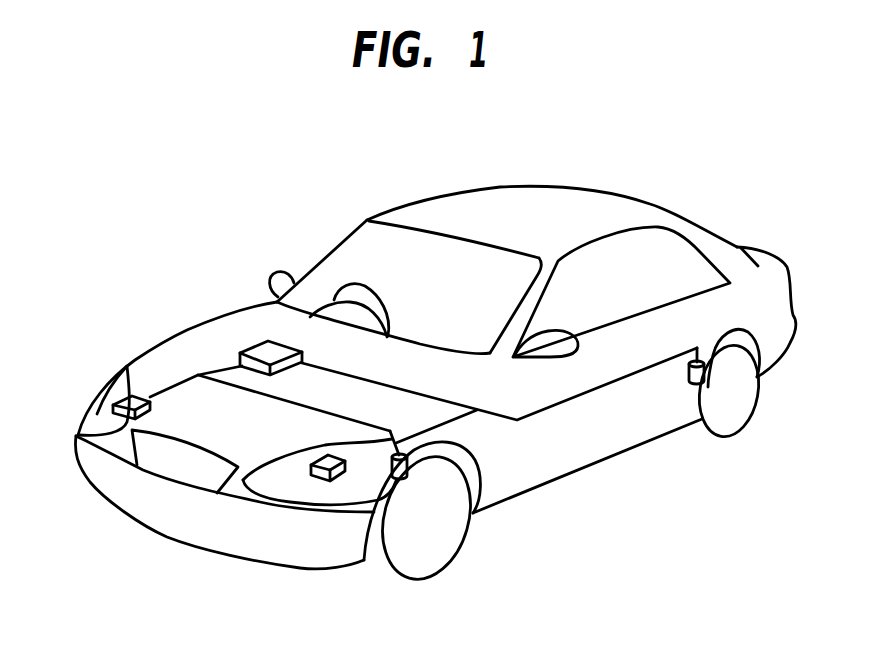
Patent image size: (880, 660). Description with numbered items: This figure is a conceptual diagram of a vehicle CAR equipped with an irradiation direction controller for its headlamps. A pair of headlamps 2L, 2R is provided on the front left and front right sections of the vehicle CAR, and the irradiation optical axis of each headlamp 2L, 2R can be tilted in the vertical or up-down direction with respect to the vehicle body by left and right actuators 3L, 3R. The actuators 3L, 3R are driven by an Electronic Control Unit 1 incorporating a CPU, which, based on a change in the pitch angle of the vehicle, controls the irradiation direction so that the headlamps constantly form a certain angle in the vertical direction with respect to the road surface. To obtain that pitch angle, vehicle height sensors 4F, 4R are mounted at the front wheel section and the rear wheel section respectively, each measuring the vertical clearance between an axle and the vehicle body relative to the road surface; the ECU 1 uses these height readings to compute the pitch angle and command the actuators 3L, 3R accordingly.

The vehicle CAR is at (479, 190).
The Electronic Control Unit (ECU) 1 is at (260, 342).
The headlamp 2R is at (97, 413).
The headlamp 2L is at (273, 484).
The actuator 3R is at (131, 396).
The actuator 3L is at (338, 481).
The vehicle height sensor 4F is at (399, 479).
The vehicle height sensor 4R is at (693, 384).